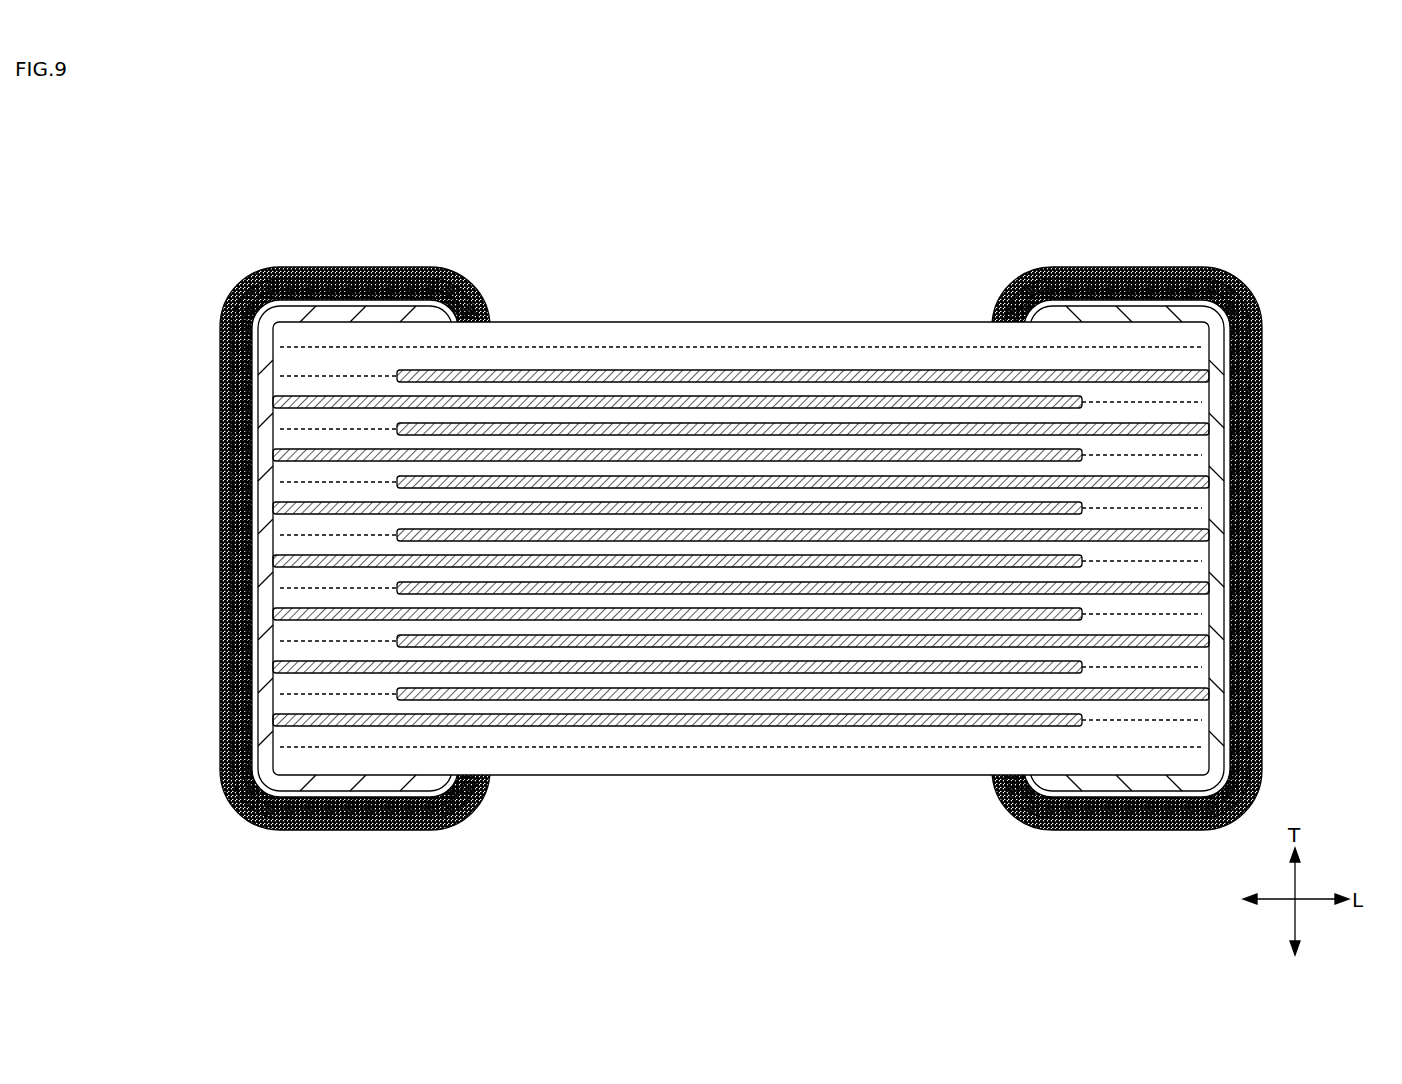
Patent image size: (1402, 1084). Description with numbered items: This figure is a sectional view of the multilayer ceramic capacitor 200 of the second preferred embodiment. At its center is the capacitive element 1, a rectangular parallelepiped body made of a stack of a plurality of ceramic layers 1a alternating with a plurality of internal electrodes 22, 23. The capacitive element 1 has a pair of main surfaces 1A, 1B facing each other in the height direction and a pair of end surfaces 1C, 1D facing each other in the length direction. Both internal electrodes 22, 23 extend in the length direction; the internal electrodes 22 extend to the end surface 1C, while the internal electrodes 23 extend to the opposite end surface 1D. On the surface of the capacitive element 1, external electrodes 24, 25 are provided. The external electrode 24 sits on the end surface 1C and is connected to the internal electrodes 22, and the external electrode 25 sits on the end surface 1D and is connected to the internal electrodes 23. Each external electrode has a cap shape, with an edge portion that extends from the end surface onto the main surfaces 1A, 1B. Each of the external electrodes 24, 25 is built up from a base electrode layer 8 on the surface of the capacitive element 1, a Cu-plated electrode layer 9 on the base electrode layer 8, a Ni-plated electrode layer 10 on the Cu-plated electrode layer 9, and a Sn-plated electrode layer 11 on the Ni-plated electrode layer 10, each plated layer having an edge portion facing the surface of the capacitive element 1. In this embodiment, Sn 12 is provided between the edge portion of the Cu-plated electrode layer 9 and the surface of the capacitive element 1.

The multilayer ceramic capacitor 200 is at (152, 98).
The capacitive element 1 is at (1340, 323).
The ceramic layers 1a is at (1196, 334).
The main surface 1A is at (727, 800).
The main surface 1B is at (725, 305).
The end surface 1C is at (205, 337).
The end surface 1D is at (1285, 327).
The base electrode layer 8 is at (308, 310).
The Cu-plated electrode layer 9 is at (333, 310).
The Ni-plated electrode layer 10 is at (365, 303).
The Sn-plated electrode layer 11 is at (395, 295).
The Sn 12 is at (466, 288).
The internal electrodes 22 is at (283, 398).
The internal electrodes 23 is at (397, 374).
The external electrode 24 is at (425, 160).
The external electrode 25 is at (1205, 160).